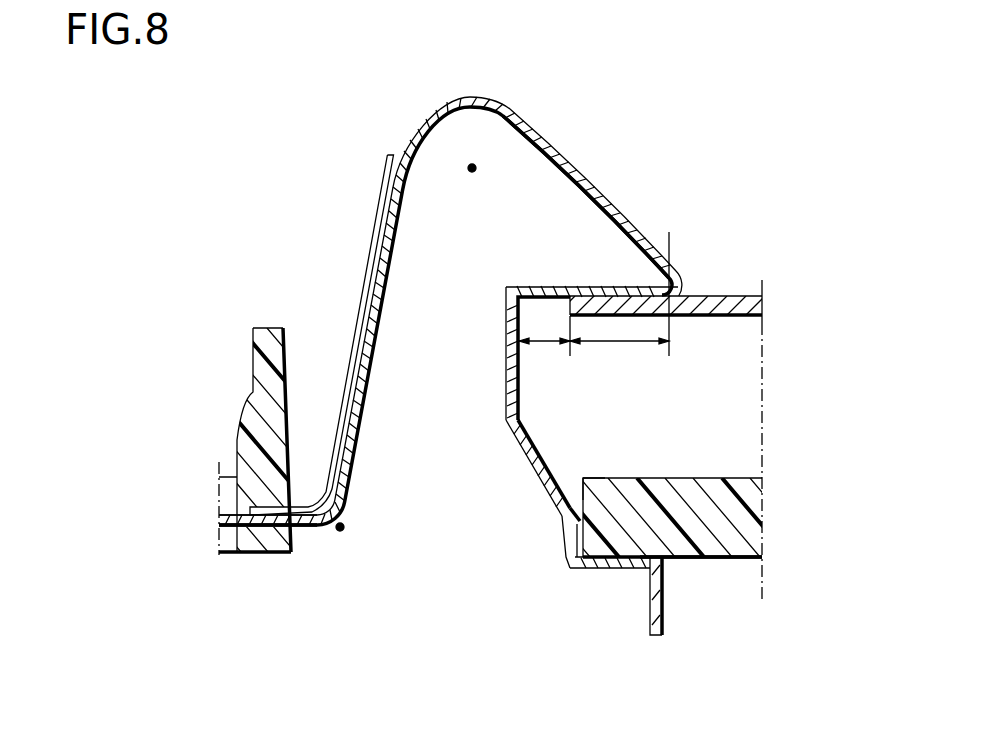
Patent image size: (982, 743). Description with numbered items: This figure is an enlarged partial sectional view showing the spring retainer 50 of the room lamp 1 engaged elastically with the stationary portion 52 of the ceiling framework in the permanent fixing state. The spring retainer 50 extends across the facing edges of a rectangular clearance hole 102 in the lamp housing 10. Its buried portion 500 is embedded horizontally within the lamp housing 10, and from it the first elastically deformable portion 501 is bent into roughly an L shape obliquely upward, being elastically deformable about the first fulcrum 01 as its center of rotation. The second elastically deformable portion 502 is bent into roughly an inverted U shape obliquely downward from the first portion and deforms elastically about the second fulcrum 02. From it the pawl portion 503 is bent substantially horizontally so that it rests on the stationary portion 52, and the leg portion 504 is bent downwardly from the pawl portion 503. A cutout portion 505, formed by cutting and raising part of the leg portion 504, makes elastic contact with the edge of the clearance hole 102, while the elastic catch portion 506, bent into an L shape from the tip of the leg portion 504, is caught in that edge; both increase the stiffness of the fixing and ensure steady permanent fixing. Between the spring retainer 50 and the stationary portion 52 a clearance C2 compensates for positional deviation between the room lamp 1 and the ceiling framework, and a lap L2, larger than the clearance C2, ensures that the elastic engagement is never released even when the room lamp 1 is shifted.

The room lamp 1 is at (703, 564).
The lamp housing 10 is at (706, 478).
The clearance hole 102 is at (572, 492).
The spring retainer 50 is at (386, 139).
The buried portion 500 is at (254, 527).
The first elastically deformable portion 501 is at (367, 263).
The second elastically deformable portion 502 is at (591, 186).
The pawl portion 503 is at (577, 287).
The leg portion 504 is at (515, 445).
The cutout portion 505 is at (567, 530).
The elastic catch portion 506 is at (615, 568).
The stationary portion 52 is at (613, 298).
The first fulcrum 01 is at (343, 530).
The second fulcrum 02 is at (472, 172).
The clearance C2 is at (544, 347).
The lap L2 is at (619, 305).